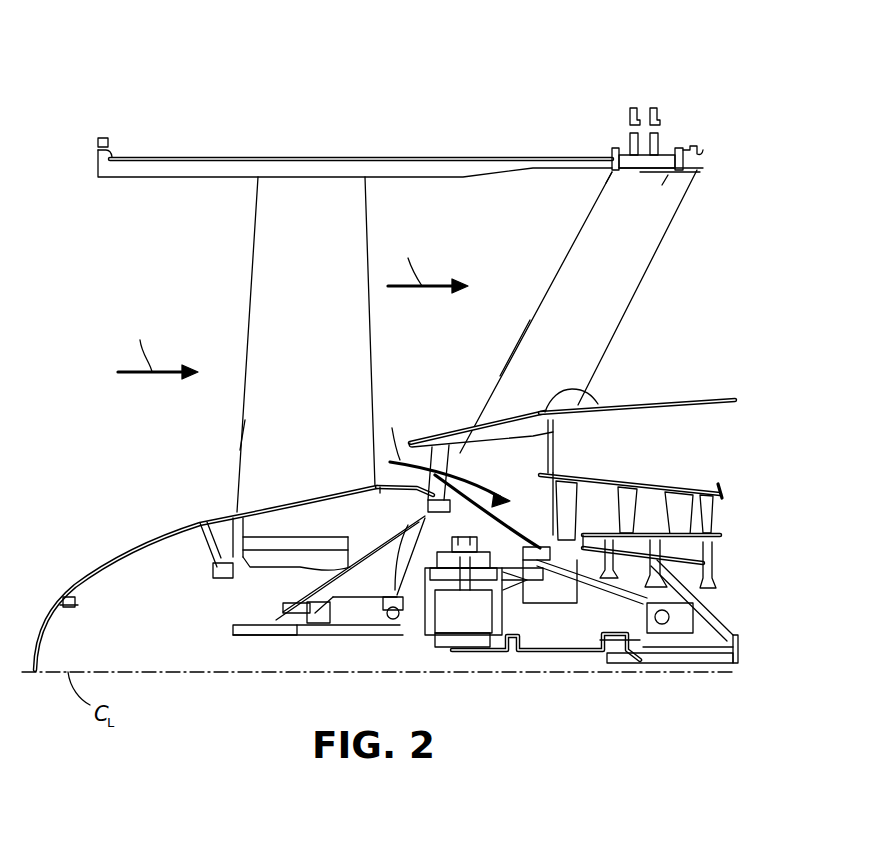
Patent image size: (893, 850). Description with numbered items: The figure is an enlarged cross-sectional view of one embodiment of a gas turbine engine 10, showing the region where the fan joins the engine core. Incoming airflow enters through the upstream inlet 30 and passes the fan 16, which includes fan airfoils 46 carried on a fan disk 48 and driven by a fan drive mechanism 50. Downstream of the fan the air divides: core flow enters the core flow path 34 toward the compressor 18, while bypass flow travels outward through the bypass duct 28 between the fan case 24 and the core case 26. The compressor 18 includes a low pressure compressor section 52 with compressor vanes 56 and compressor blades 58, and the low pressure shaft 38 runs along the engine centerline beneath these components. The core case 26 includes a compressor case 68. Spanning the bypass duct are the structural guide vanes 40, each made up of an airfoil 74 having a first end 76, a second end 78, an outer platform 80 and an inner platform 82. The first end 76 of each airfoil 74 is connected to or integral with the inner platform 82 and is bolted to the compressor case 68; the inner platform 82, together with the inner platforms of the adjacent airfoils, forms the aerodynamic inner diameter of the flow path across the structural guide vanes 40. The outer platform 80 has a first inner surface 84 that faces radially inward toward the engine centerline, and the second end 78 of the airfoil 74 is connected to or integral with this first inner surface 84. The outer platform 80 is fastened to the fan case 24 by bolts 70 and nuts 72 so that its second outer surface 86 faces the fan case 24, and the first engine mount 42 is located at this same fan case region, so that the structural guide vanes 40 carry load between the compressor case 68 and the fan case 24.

The gas turbine engine 10 is at (116, 92).
The fan 16 is at (214, 484).
The compressor 18 is at (746, 533).
The fan case 24 is at (398, 153).
The core case 26 is at (718, 397).
The bypass duct 28 is at (713, 347).
The upstream inlet 30 is at (206, 301).
The core flow path 34 is at (582, 503).
The low pressure (LP) shaft 38 is at (712, 658).
The structural guide vanes 40 is at (558, 330).
The first engine mount 42 is at (654, 148).
The fan airfoils 46 is at (253, 433).
The fan disk 48 is at (296, 624).
The fan drive mechanism 50 is at (423, 622).
The low pressure compressor (LPC) section 52 is at (647, 490).
The compressor vanes 56 is at (563, 490).
The compressor blades 58 is at (713, 512).
The compressor case 68 is at (428, 433).
The bolts 70 is at (611, 158).
The nuts 72 is at (687, 150).
The airfoils 74 is at (566, 277).
The first end 76 is at (608, 186).
The second end 78 is at (513, 380).
The outer platform 80 is at (642, 176).
The inner platform 82 is at (583, 387).
The first inner surface 84 is at (680, 186).
The second outer surface 86 is at (701, 169).